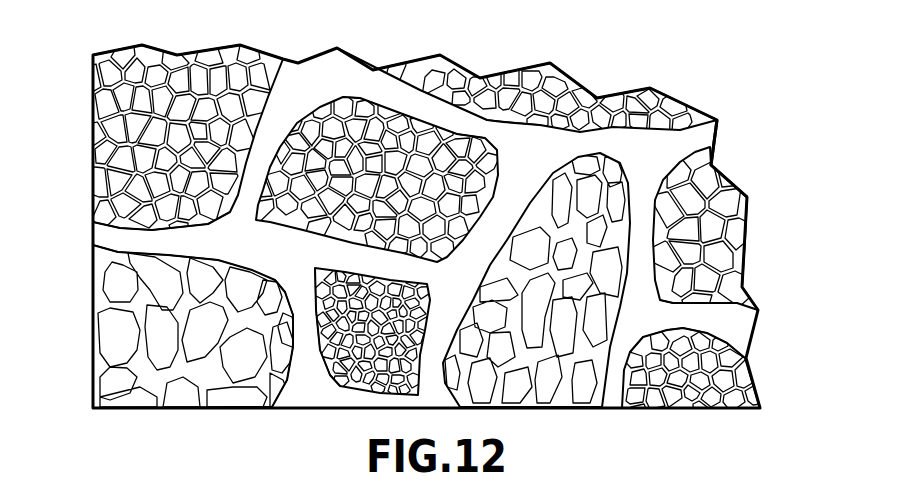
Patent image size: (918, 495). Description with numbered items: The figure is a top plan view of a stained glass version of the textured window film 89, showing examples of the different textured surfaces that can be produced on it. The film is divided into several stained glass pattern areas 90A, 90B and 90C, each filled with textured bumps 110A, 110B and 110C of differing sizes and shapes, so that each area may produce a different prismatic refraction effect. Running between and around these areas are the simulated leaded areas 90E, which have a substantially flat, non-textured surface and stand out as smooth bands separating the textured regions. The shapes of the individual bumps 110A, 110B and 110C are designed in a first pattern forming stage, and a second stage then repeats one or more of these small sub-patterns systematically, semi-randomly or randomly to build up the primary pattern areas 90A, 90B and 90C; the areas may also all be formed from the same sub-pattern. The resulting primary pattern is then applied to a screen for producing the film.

The textured window film 89 is at (690, 64).
The textured area 90A is at (362, 84).
The textured area 90B is at (722, 171).
The textured area 90C is at (282, 373).
The simulated leaded area 90E is at (103, 229).
The textured bump 110A is at (314, 150).
The textured bump 110B is at (745, 212).
The textured bump 110C is at (232, 373).